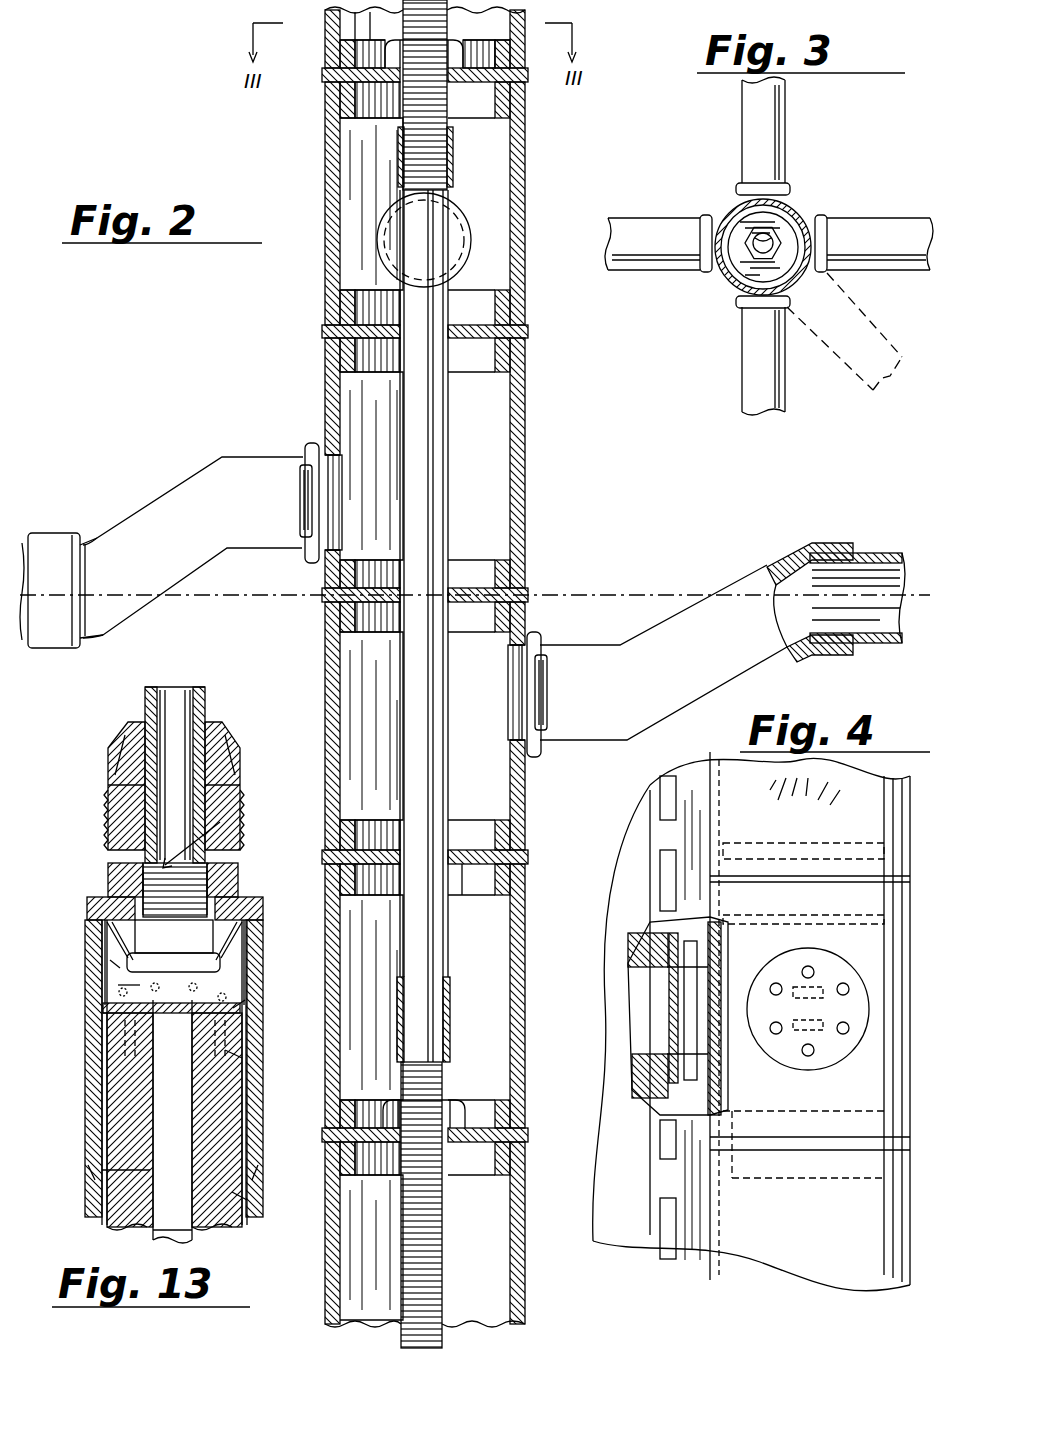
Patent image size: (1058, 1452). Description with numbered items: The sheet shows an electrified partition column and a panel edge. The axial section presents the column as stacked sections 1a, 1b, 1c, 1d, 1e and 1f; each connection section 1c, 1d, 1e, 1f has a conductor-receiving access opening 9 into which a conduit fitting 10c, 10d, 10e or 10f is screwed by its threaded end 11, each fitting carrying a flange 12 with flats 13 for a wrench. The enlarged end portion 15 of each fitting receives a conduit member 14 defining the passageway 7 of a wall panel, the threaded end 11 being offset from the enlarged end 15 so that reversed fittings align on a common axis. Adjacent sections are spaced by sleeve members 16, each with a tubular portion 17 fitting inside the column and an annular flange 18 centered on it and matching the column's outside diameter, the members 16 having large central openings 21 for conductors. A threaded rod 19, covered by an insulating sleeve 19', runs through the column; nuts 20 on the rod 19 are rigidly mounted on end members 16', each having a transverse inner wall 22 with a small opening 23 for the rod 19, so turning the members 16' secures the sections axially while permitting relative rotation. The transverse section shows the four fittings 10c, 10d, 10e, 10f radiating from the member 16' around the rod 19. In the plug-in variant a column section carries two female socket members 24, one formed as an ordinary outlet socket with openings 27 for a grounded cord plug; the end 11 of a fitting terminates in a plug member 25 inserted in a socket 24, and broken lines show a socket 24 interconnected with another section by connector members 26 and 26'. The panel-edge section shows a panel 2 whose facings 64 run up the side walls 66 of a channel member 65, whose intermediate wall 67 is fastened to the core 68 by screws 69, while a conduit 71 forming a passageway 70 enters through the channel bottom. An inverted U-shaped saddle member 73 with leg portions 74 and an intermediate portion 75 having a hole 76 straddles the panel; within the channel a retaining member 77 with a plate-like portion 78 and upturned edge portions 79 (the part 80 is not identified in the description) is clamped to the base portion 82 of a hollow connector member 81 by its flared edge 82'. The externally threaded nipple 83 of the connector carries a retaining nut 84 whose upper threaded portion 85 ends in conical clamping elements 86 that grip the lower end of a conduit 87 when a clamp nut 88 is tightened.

In FIG. 2, the tubular frame member section 1a is at (520, 1230).
In FIG. 2, the tubular frame member section 1b is at (325, 52).
In FIG. 3, the tubular frame member section 1b is at (806, 203).
In FIG. 2, the column section 1c is at (525, 468).
In FIG. 13, the column section 1d is at (240, 752).
In FIG. 2, the intermediate section 1e is at (525, 160).
In FIG. 2, the intermediate section 1f is at (525, 998).
In FIG. 13, the panel 2 is at (247, 1198).
In FIG. 2, the passageway 7 is at (815, 580).
In FIG. 2, the conductor-receiving access opening 9 is at (455, 222).
In FIG. 2, the conduit fitting 10c is at (245, 457).
In FIG. 3, the conduit fitting 10c is at (675, 222).
In FIG. 2, the conduit fitting 10d is at (600, 648).
In FIG. 3, the conduit fitting 10d is at (893, 222).
In FIG. 2, the conduit fitting 10e is at (452, 255).
In FIG. 3, the conduit fitting 10e is at (745, 130).
In FIG. 3, the conduit fitting 10f is at (745, 383).
In FIG. 2, the threaded end 11 is at (345, 490).
In FIG. 2, the flange 12 is at (310, 443).
In FIG. 13, the flange 12 is at (103, 1013).
In FIG. 2, the flats 13 is at (300, 508).
In FIG. 2, the conduit member 14 is at (890, 555).
In FIG. 2, the enlarged end portion 15 is at (835, 543).
In FIG. 2, the sleeve member 16 is at (421, 549).
In FIG. 4, the sleeve member 16 is at (803, 1021).
In FIG. 3, the end member 16' is at (735, 282).
In FIG. 2, the tubular portion 17 is at (512, 108).
In FIG. 2, the annular flange 18 is at (527, 76).
In FIG. 4, the annular flange 18 is at (904, 882).
In FIG. 2, the threaded rod 19 is at (459, 626).
In FIG. 3, the threaded rod 19 is at (718, 267).
In FIG. 2, the insulating sleeve 19' is at (447, 1019).
In FIG. 2, the nut 20 is at (455, 45).
In FIG. 2, the central opening 21 is at (462, 872).
In FIG. 2, the inner wall 22 is at (378, 1145).
In FIG. 2, the small opening 23 is at (430, 1145).
In FIG. 4, the female socket member 24 is at (840, 975).
In FIG. 4, the plug member 25 is at (640, 1058).
In FIG. 4, the connector member 26 is at (717, 1017).
In FIG. 4, the connector member 26' is at (784, 791).
In FIG. 4, the openings 27 is at (825, 1000).
In FIG. 13, the facings 64 is at (248, 1165).
In FIG. 13, the channel member 65 is at (254, 993).
In FIG. 13, the side walls 66 is at (240, 1013).
In FIG. 13, the intermediate wall 67 is at (222, 1035).
In FIG. 13, the core 68 is at (107, 1098).
In FIG. 13, the screws 69 is at (245, 1060).
In FIG. 13, the passageway 70 is at (153, 1232).
In FIG. 13, the conduit 71 is at (102, 1170).
In FIG. 13, the saddle member 73 is at (73, 1055).
In FIG. 13, the leg portions 74 is at (250, 1130).
In FIG. 13, the intermediate portion 75 is at (133, 925).
In FIG. 13, the hole 76 is at (255, 905).
In FIG. 13, the retaining member 77 is at (118, 985).
In FIG. 13, the plate-like portion 78 is at (108, 962).
In FIG. 13, the upturned longitudinal edge portions 79 is at (105, 935).
In FIG. 13, the wall 80 is at (103, 922).
In FIG. 13, the hollow connector member 81 is at (222, 822).
In FIG. 13, the base portion 82 is at (132, 876).
In FIG. 13, the flared edge portions 82' is at (172, 1121).
In FIG. 13, the externally threaded nipple 83 is at (210, 870).
In FIG. 13, the retaining nut 84 is at (240, 885).
In FIG. 13, the threaded portion 85 is at (104, 812).
In FIG. 13, the conical clamping elements 86 is at (130, 740).
In FIG. 13, the conduit 87 is at (205, 700).
In FIG. 13, the clamp nut 88 is at (240, 772).